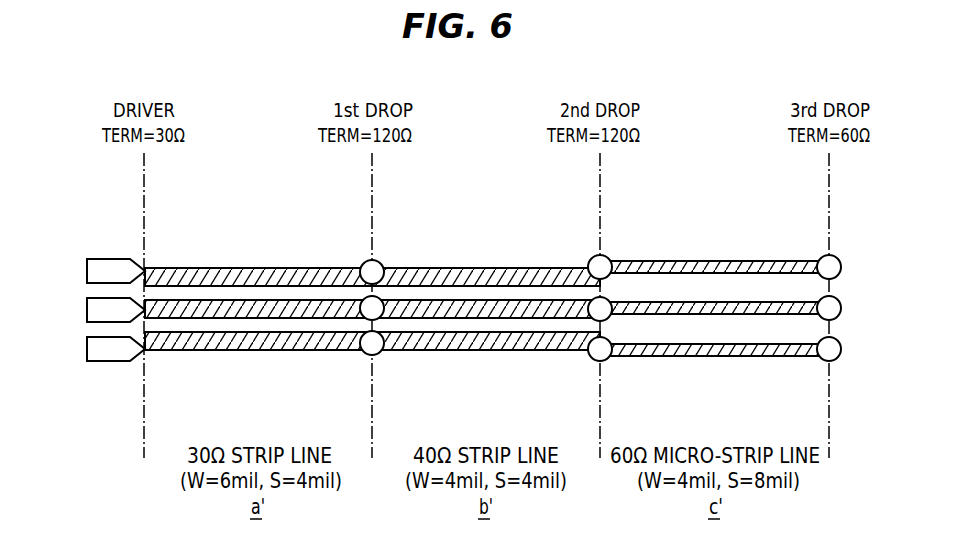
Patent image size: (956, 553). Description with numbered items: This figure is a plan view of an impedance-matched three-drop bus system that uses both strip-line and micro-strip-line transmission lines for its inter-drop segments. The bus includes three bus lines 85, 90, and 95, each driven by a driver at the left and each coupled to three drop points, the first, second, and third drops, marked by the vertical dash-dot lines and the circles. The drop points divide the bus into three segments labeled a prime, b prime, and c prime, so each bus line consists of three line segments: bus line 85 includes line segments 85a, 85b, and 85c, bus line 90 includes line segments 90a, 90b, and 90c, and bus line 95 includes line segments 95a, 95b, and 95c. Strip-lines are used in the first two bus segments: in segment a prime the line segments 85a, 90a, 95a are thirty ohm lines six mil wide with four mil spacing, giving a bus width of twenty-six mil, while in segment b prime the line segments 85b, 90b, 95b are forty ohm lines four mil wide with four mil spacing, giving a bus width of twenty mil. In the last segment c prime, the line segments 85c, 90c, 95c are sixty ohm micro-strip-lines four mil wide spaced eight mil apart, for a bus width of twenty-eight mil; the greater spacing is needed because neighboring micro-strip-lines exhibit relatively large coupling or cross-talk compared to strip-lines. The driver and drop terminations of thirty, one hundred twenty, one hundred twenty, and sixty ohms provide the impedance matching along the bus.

The bus line 85 is at (87, 271).
The bus line 90 is at (87, 310).
The bus line 95 is at (87, 349).
The line segment 85a is at (186, 268).
The line segment 90a is at (257, 300).
The line segment 95a is at (207, 350).
The line segment 85b is at (421, 268).
The line segment 90b is at (487, 300).
The line segment 95b is at (453, 350).
The line segment 85c is at (651, 260).
The line segment 90c is at (708, 302).
The line segment 95c is at (690, 357).